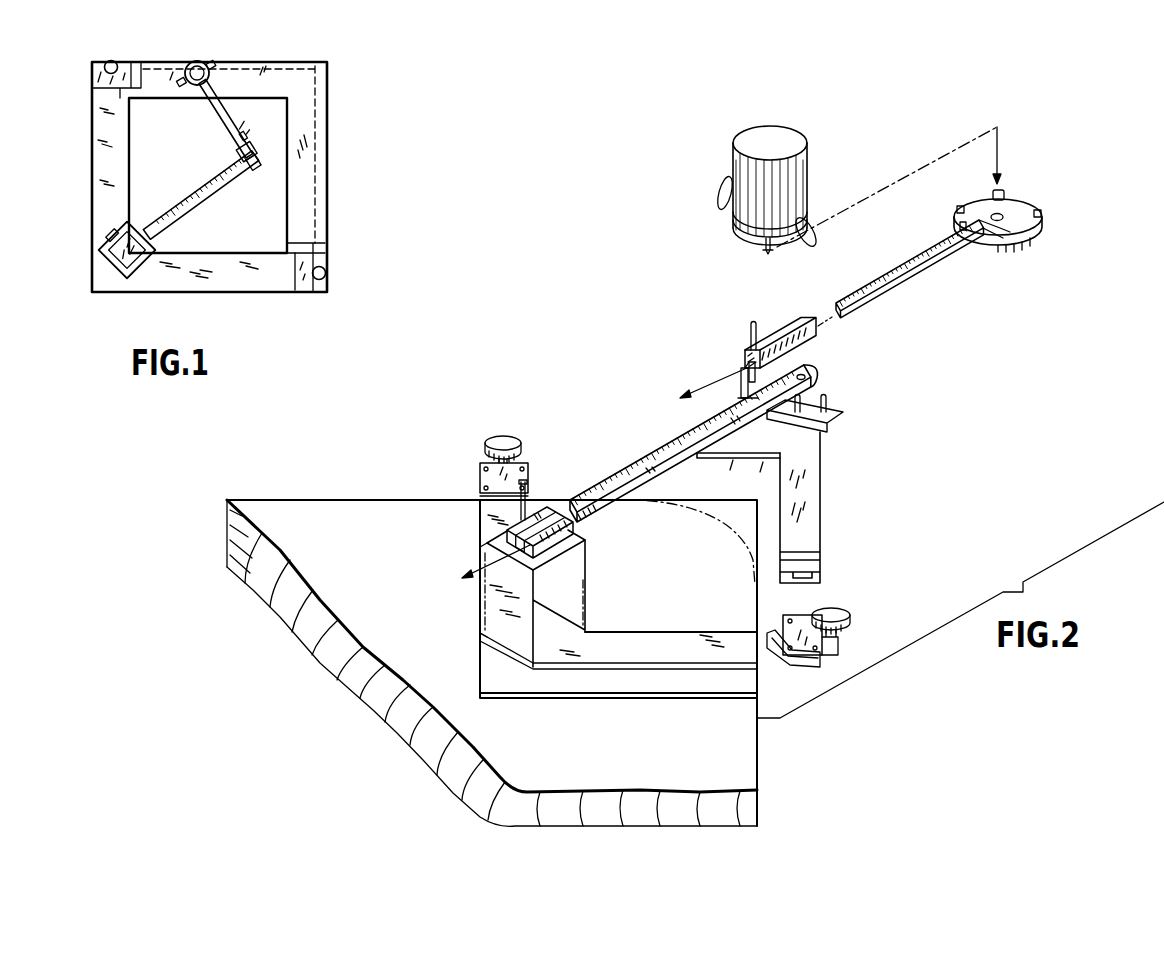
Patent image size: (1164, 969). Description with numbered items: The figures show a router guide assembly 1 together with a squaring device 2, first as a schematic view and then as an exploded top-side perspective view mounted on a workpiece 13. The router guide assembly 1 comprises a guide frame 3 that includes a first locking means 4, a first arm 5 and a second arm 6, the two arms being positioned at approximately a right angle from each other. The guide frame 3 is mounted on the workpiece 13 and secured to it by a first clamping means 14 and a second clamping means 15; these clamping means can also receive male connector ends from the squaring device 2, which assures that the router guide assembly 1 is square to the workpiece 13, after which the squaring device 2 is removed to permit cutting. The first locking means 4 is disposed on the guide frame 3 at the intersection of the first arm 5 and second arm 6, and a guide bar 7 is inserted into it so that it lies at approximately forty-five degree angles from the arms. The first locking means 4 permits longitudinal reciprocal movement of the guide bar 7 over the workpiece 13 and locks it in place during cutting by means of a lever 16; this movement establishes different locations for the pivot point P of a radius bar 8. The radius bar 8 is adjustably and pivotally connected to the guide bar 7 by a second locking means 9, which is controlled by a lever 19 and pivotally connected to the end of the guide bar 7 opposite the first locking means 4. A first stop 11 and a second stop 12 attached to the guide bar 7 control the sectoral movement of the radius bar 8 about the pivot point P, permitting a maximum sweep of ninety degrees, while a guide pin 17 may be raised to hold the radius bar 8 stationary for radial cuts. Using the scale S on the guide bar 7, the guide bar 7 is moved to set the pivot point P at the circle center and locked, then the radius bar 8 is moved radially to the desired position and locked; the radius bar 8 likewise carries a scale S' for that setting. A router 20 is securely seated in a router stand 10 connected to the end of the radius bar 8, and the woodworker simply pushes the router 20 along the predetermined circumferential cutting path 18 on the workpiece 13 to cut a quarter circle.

In FIG. 1, the router guide assembly 1 is at (184, 296).
In FIG. 2, the router guide assembly 1 is at (571, 706).
In FIG. 1, the squaring device 2 is at (330, 121).
In FIG. 2, the squaring device 2 is at (820, 548).
In FIG. 1, the guide frame 3 is at (92, 293).
In FIG. 2, the guide frame 3 is at (480, 638).
In FIG. 1, the first locking means 4 is at (122, 237).
In FIG. 2, the first locking means 4 is at (565, 557).
In FIG. 1, the first arm 5 is at (93, 188).
In FIG. 2, the first arm 5 is at (488, 521).
In FIG. 1, the second arm 6 is at (245, 283).
In FIG. 2, the second arm 6 is at (668, 629).
In FIG. 1, the guide bar 7 is at (183, 216).
In FIG. 2, the guide bar 7 is at (623, 472).
In FIG. 1, the radius bar 8 is at (228, 106).
In FIG. 2, the radius bar 8 is at (883, 273).
In FIG. 1, the second locking means 9 is at (254, 142).
In FIG. 1, the router stand 10 is at (209, 76).
In FIG. 2, the router stand 10 is at (1033, 231).
In FIG. 1, the first stop 11 is at (222, 140).
In FIG. 2, the first stop 11 is at (744, 393).
In FIG. 1, the second stop 12 is at (240, 161).
In FIG. 2, the second stop 12 is at (828, 407).
In FIG. 2, the workpiece 13 is at (326, 550).
In FIG. 1, the first clamping means 14 is at (330, 278).
In FIG. 2, the first clamping means 14 is at (798, 677).
In FIG. 1, the second clamping means 15 is at (90, 82).
In FIG. 2, the second clamping means 15 is at (480, 482).
In FIG. 2, the lever 16 is at (532, 500).
In FIG. 2, the guide pin 17 is at (806, 400).
In FIG. 2, the circumferential cutting path 18 is at (730, 530).
In FIG. 2, the lever 19 is at (748, 334).
In FIG. 2, the router 20 is at (788, 138).
In FIG. 2, the pivot point P is at (813, 368).
In FIG. 1, the scale S is at (168, 180).
In FIG. 2, the scale S is at (687, 479).
In FIG. 2, the second scale S' is at (928, 281).